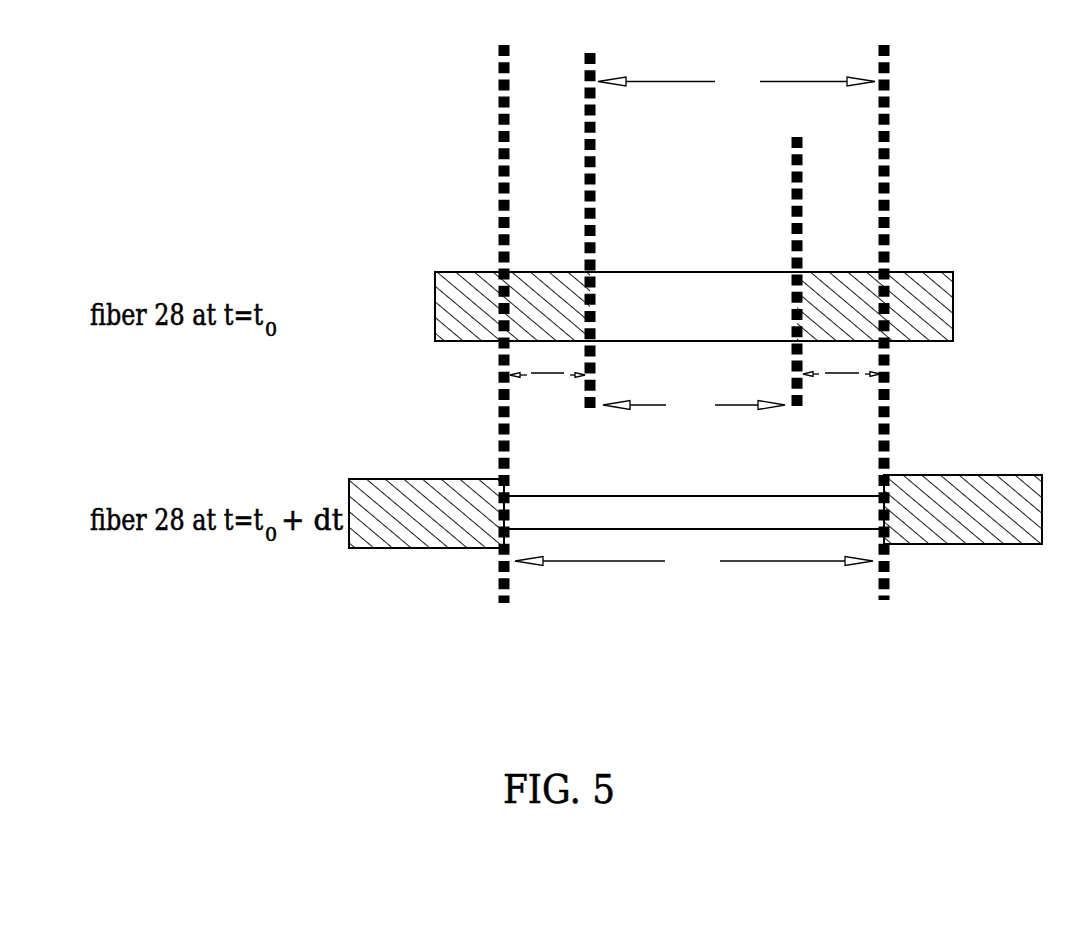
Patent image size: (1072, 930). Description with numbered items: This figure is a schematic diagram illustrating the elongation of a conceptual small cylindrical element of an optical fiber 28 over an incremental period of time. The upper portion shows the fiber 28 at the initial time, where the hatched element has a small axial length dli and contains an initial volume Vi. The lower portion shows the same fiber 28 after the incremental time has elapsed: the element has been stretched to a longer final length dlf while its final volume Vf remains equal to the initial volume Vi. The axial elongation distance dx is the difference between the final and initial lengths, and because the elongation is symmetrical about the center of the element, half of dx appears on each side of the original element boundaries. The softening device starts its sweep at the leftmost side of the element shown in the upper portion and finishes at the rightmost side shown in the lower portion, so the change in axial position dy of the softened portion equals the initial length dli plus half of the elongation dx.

The optical fiber 28 is at (453, 278).
The change of axial position of the softened portion dy is at (736, 84).
The axial elongation distance dx is at (695, 375).
The initial axial length of the cylindrical element dli is at (694, 401).
The final axial length of the cylindrical element dlf is at (694, 555).
The initial volume of the cylindrical element Vi is at (691, 305).
The final volume of the cylindrical element Vf is at (697, 510).